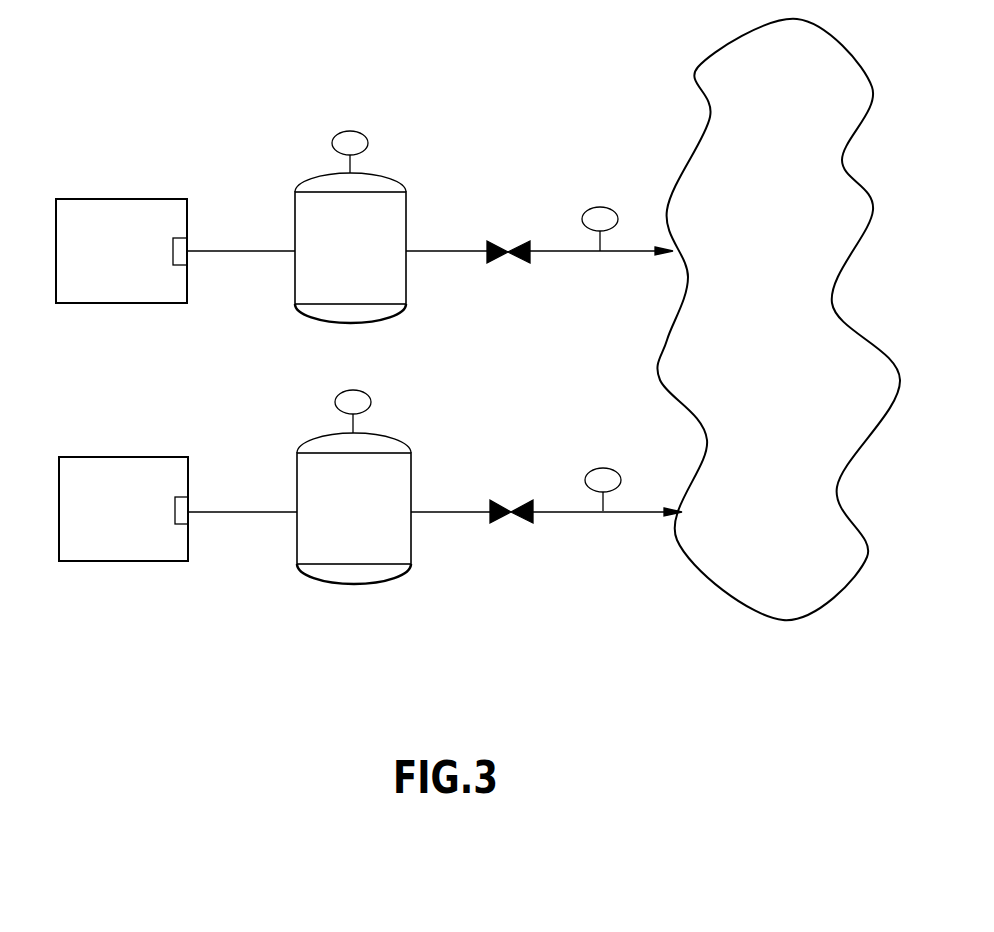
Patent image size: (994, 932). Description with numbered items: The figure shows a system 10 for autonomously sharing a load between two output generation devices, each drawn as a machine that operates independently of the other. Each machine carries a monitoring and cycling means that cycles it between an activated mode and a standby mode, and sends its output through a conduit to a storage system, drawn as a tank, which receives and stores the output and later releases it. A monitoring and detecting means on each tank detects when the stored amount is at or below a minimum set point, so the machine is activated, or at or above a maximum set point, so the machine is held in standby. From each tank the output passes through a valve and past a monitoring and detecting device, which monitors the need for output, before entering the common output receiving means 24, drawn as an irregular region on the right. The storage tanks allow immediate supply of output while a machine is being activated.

The system 10 is at (442, 88).
The output receiving means 24 is at (730, 612).